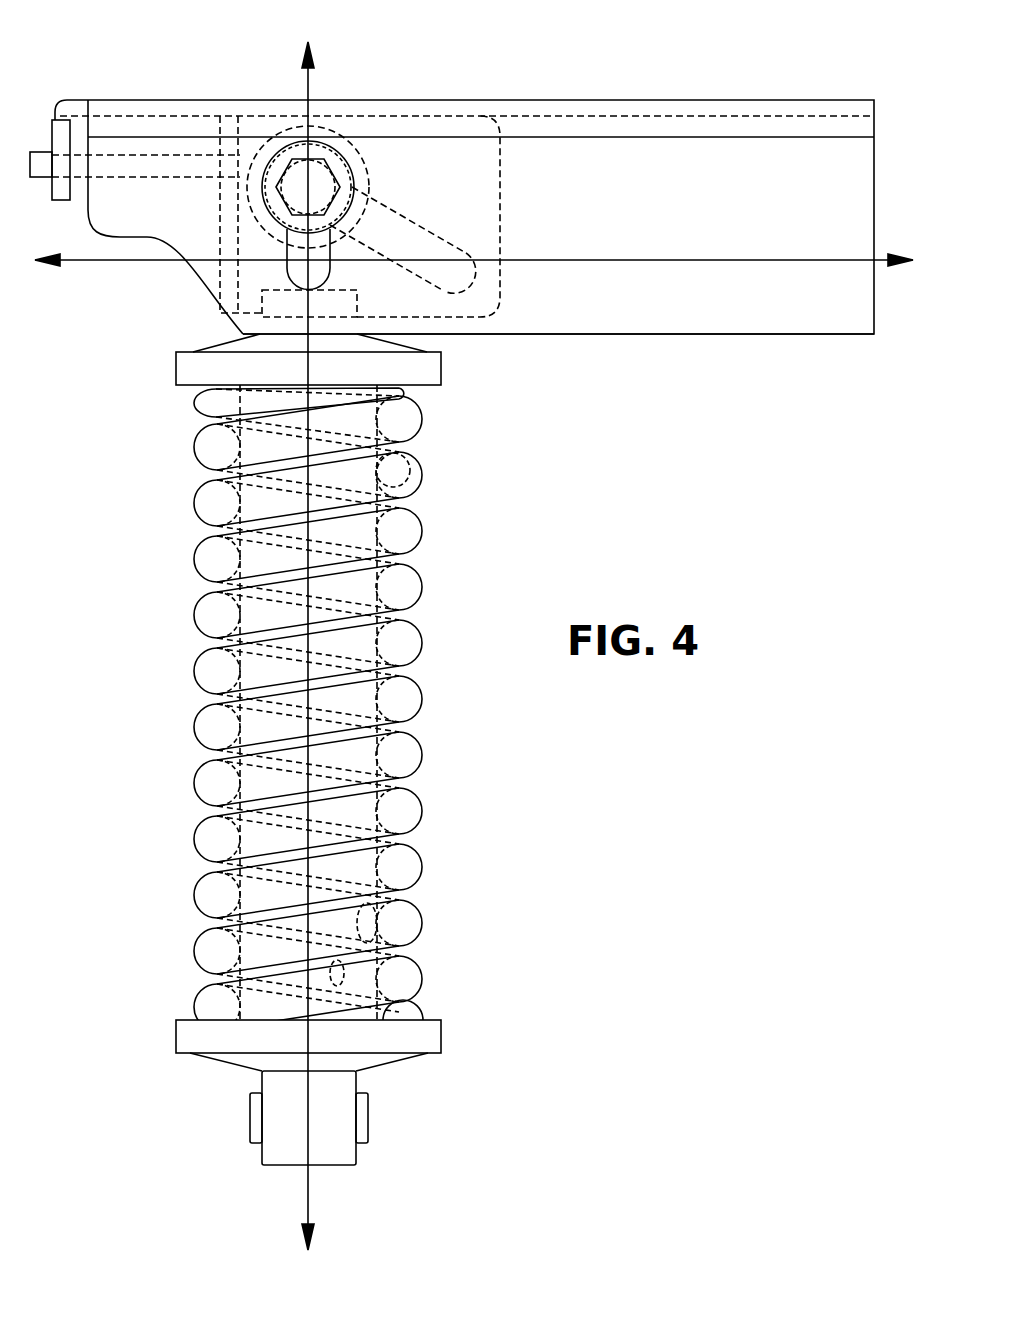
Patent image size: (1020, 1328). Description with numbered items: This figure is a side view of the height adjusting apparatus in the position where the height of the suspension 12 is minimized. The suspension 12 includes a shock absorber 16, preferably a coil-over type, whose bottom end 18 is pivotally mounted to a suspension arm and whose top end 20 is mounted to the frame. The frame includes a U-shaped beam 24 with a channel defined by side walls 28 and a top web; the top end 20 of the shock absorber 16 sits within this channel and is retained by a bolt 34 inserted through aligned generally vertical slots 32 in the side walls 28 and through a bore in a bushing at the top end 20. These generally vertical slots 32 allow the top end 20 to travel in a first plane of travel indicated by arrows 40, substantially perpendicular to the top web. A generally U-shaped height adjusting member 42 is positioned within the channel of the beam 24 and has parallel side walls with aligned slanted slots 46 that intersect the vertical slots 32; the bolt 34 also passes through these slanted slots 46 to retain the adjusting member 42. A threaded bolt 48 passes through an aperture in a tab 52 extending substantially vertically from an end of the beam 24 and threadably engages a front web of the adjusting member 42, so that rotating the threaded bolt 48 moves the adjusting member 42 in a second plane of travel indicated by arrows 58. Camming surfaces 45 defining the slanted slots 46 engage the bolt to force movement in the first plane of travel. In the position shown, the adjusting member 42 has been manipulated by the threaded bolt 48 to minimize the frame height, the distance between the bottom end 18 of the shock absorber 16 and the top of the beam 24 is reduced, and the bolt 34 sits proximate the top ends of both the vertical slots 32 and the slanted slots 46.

The suspension 12 is at (176, 630).
The shock absorber 16 is at (413, 823).
The bottom end 18 is at (370, 1125).
The top end 20 is at (176, 352).
The U-shaped beam 24 is at (721, 97).
The side walls 28 is at (701, 320).
The generally vertical slots 32 is at (317, 272).
The bolt 34 is at (279, 176).
The first plane of travel arrows 40 is at (313, 1200).
The height adjusting member 42 is at (253, 272).
The camming surfaces 45 is at (442, 235).
The slanted slots 46 is at (383, 220).
The threaded bolt 48 is at (37, 182).
The tab 52 is at (62, 137).
The second plane of travel arrows 58 is at (876, 258).